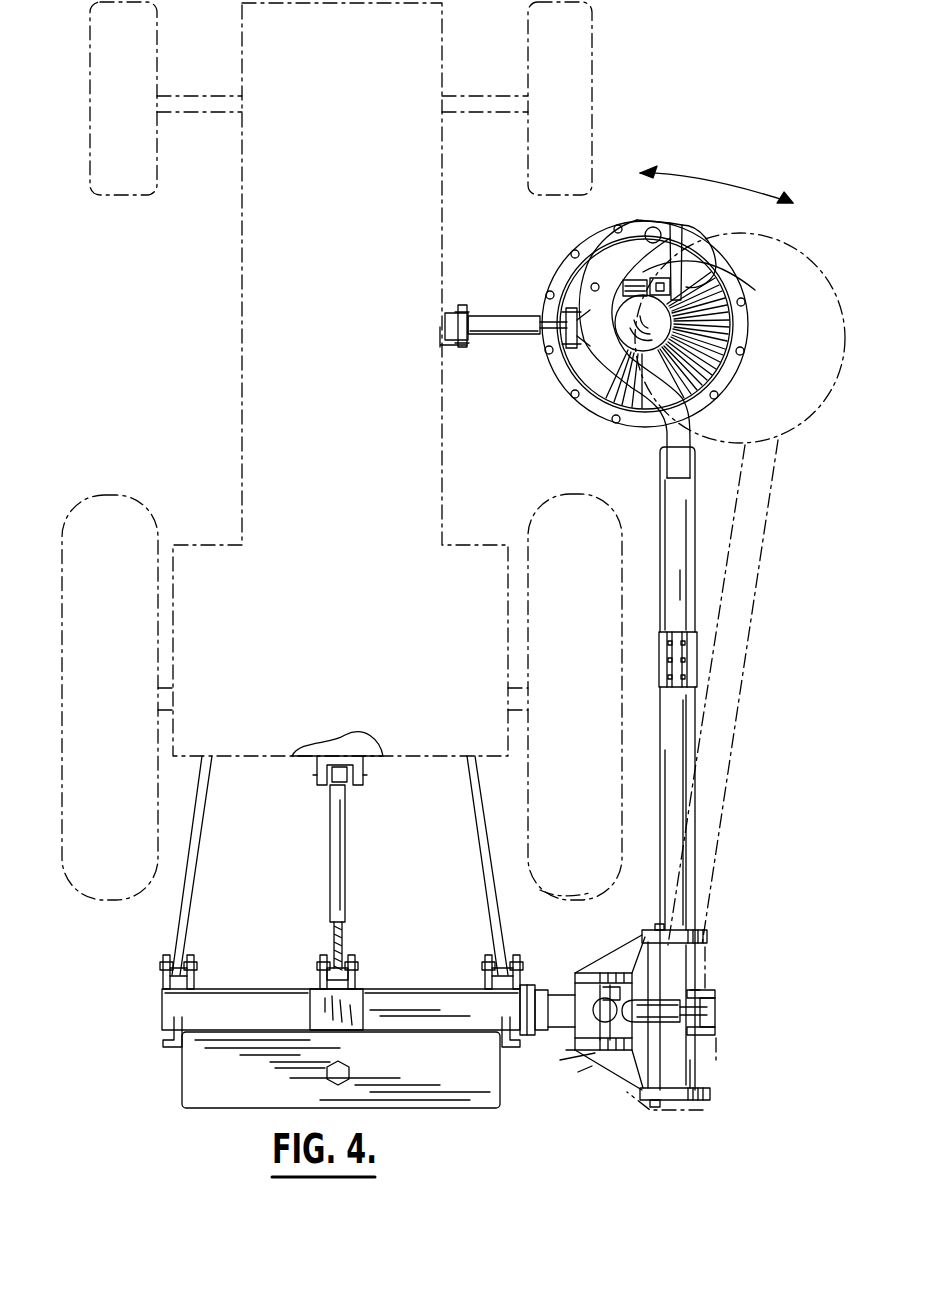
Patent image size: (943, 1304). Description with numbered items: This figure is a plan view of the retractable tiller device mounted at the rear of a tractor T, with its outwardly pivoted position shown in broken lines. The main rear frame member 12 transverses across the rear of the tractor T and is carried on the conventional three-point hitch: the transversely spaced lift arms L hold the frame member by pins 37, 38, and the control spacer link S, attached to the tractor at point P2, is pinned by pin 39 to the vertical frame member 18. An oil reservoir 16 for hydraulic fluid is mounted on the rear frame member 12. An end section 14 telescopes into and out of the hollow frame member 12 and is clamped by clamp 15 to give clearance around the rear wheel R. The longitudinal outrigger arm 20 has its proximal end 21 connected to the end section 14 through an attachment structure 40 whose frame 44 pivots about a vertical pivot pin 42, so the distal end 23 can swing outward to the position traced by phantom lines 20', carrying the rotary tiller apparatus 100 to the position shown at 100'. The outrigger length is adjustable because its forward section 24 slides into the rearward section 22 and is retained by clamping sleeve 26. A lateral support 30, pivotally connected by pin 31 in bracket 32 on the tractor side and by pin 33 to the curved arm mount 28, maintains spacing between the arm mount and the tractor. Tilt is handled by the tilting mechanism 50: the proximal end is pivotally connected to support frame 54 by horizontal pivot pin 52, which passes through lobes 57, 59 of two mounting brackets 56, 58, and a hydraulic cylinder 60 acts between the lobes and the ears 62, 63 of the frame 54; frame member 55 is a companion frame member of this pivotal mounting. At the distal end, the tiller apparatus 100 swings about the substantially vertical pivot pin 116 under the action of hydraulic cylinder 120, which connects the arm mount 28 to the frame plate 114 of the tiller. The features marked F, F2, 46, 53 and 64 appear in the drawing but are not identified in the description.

The tractor T is at (240, 298).
The front wheel F is at (592, 95).
The front wheel F2 is at (90, 95).
The rear wheel R is at (62, 640).
The main rear frame member 12 is at (415, 989).
The end section 14 is at (555, 1030).
The clamp 15 is at (540, 988).
The oil reservoir 16 is at (185, 1110).
The vertical frame member 18 is at (312, 1005).
The longitudinal outrigger arm 20 is at (656, 539).
The outrigger arm in phantom position 20' is at (744, 692).
The proximal end 21 is at (697, 1062).
The rearward section 22 is at (660, 742).
The distal end 23 is at (660, 472).
The forward section 24 is at (660, 588).
The clamping sleeve 26 is at (659, 640).
The curved arm mount 28 is at (585, 400).
The lateral support 30 is at (510, 316).
The pivot pin 31 is at (458, 348).
The bracket 32 is at (446, 347).
The pivot pin 33 is at (563, 345).
The pin 37 is at (160, 975).
The pin 38 is at (483, 975).
The pin 39 is at (320, 975).
The pivotal attachment structure 40 is at (575, 1062).
The vertical pivot pin 42 is at (637, 965).
The frame 44 is at (580, 973).
The swing direction arrow 46 is at (710, 180).
The tilting mechanism 50 is at (706, 968).
The horizontal pivot pin 52 is at (650, 1112).
The rear wheel outline 53 is at (600, 903).
The support frame 54 is at (625, 1080).
The frame member 55 is at (565, 1055).
The mounting bracket 56 is at (700, 1100).
The lobe 57 is at (655, 1107).
The mounting bracket 58 is at (705, 930).
The lobe 59 is at (660, 925).
The hydraulic cylinder 60 is at (638, 1026).
The ear 62 is at (716, 1035).
The ear 63 is at (716, 992).
The rotation arrow 64 is at (580, 1076).
The rotary tiller apparatus 100 is at (631, 324).
The tiller apparatus in outward position 100' is at (745, 334).
The frame plate 114 is at (711, 284).
The vertical pivot pin 116 is at (652, 226).
The hydraulic cylinder 120 is at (690, 246).
The spacer link attachment point P2 is at (320, 777).
The control spacer link S is at (332, 880).
The lift arms L is at (195, 880).